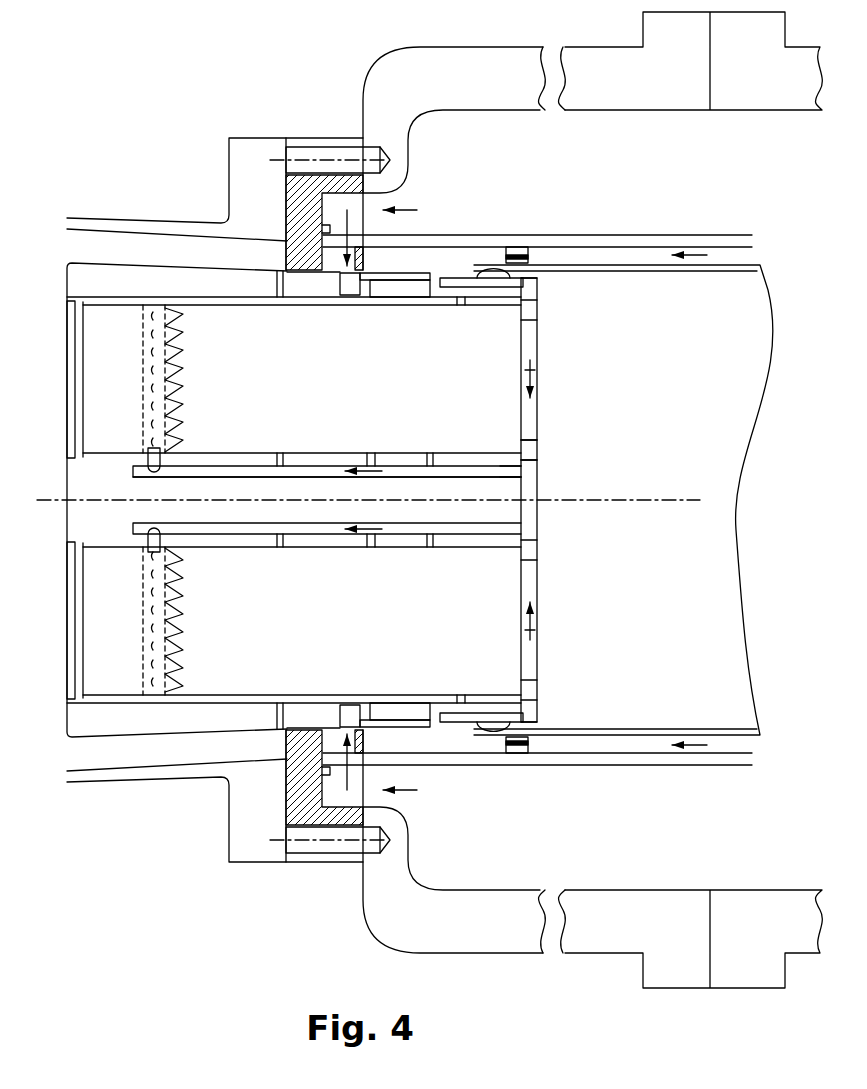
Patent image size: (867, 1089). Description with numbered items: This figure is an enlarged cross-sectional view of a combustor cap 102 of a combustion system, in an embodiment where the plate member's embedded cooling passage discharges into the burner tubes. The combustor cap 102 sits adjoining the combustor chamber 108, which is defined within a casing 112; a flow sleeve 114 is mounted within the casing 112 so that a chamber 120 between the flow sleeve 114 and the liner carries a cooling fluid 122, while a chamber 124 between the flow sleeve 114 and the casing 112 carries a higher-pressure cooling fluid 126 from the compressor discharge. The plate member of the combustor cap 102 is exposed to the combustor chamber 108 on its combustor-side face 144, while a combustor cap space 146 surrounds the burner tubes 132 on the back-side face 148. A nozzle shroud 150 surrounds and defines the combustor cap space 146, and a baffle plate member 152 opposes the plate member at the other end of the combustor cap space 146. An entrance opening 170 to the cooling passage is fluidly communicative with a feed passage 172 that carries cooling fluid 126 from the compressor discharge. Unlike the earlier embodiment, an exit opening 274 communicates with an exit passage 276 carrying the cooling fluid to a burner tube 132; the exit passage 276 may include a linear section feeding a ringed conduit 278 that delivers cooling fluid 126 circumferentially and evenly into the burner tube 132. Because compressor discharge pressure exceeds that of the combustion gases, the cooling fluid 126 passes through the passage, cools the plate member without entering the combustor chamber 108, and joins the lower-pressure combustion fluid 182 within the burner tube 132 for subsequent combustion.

The combustor cap 102 is at (552, 437).
The combustor chamber 108 is at (665, 412).
The casing 112 is at (663, 88).
The flow sleeve 114 is at (525, 234).
The chamber 120 is at (740, 252).
The cooling fluid 122 is at (694, 251).
The chamber 124 is at (483, 155).
The cooling fluid 126 is at (402, 202).
The burner tube 132 is at (212, 330).
The combustor-side face 144 is at (537, 348).
The combustor cap space 146 is at (196, 499).
The back-side face 148 is at (521, 417).
The nozzle shroud 150 is at (107, 262).
The baffle plate member 152 is at (63, 358).
The entrance opening 170 is at (537, 283).
The feed passage 172 is at (452, 290).
The combustion fluid 182 is at (282, 387).
The exit opening 274 is at (522, 470).
The exit passage 276 is at (300, 470).
The ringed conduit 278 is at (163, 378).